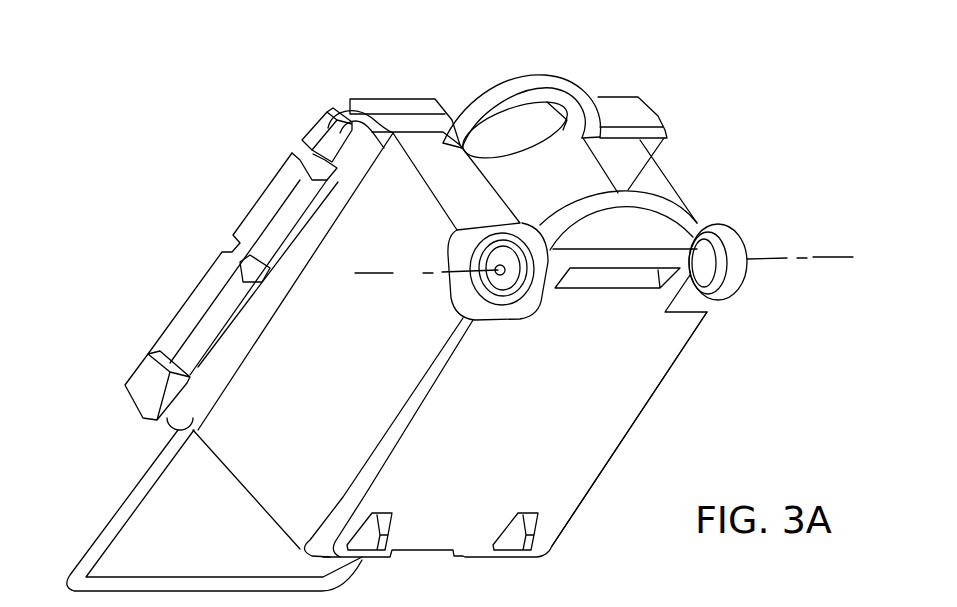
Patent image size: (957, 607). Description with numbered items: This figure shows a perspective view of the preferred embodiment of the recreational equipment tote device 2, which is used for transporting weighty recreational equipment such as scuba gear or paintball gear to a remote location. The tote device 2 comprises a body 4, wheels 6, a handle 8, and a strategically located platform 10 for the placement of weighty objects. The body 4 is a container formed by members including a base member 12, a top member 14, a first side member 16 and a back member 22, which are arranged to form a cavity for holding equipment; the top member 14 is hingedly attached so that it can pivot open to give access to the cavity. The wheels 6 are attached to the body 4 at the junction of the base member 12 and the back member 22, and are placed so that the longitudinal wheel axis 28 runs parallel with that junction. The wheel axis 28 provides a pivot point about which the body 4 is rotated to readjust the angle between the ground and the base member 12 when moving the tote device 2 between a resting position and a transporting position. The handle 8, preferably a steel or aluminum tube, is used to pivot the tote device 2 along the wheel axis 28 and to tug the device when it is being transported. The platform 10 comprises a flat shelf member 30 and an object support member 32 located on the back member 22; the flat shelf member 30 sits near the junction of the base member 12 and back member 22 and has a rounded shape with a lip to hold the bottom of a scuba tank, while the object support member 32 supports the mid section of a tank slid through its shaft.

The recreational equipment tote device 2 is at (668, 90).
The body 4 is at (473, 457).
The wheels 6 is at (538, 288).
The handle 8 is at (108, 537).
The platform 10 is at (638, 225).
The base member 12 is at (550, 453).
The top member 14 is at (262, 197).
The first side member 16 is at (310, 438).
The back member 22 is at (657, 122).
The longitudinal wheel axis 28 is at (397, 274).
The flat shelf member 30 is at (658, 178).
The object support member 32 is at (520, 87).